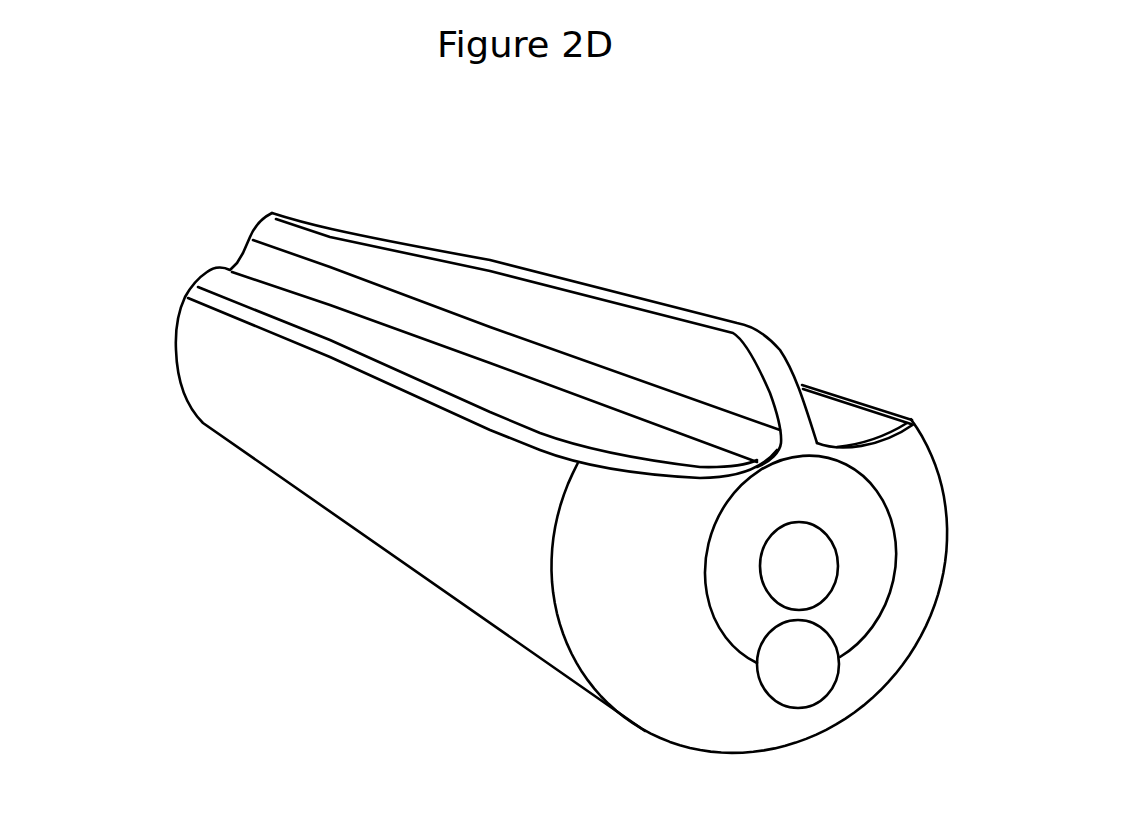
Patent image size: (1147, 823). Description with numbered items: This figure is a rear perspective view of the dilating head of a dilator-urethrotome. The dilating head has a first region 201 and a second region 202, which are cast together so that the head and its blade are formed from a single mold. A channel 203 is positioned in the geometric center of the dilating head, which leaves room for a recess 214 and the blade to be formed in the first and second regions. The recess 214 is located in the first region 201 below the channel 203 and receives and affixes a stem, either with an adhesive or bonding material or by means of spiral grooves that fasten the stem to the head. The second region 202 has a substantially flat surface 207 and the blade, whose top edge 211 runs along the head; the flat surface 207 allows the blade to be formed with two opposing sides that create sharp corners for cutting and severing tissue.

The first region 201 is at (360, 502).
The second region 202 is at (913, 477).
The channel 203 is at (813, 555).
The flat surface 207 is at (880, 400).
The top edge 211 is at (618, 285).
The recess 214 is at (785, 684).